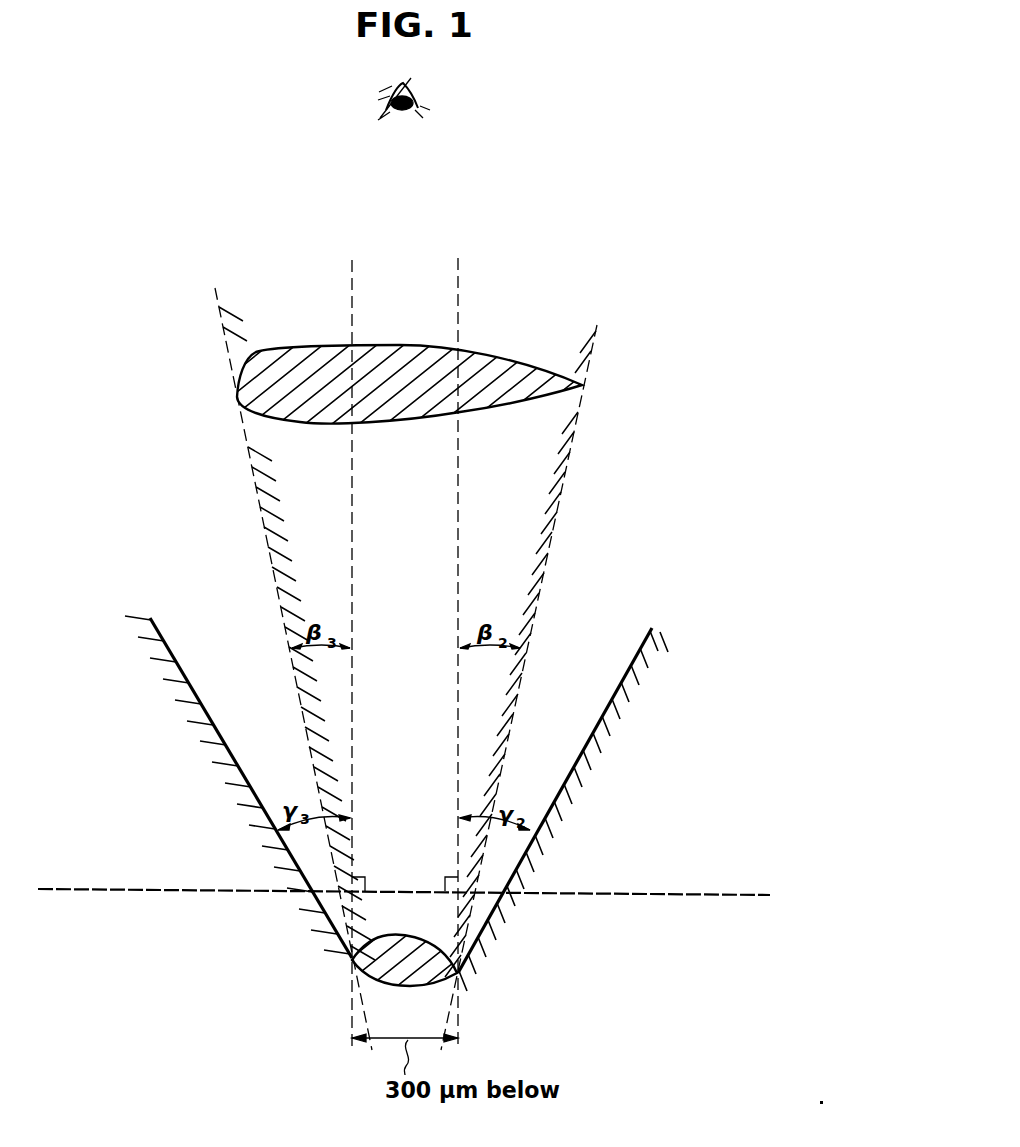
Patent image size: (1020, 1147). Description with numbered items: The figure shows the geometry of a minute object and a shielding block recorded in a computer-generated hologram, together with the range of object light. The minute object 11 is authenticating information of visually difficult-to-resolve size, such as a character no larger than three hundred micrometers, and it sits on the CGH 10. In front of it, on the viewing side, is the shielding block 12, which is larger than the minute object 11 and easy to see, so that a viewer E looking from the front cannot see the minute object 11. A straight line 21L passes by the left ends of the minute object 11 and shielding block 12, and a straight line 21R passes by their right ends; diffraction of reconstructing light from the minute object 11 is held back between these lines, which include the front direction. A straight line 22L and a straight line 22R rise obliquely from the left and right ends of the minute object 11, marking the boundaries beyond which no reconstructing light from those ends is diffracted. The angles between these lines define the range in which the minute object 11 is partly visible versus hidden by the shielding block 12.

The viewer E is at (416, 100).
The CGH 10 is at (645, 894).
The minute object 11 is at (460, 972).
The shielding block 12 is at (483, 350).
The straight line 21L is at (226, 346).
The straight line 21R is at (578, 410).
The straight line 22L is at (168, 637).
The straight line 22R is at (649, 640).